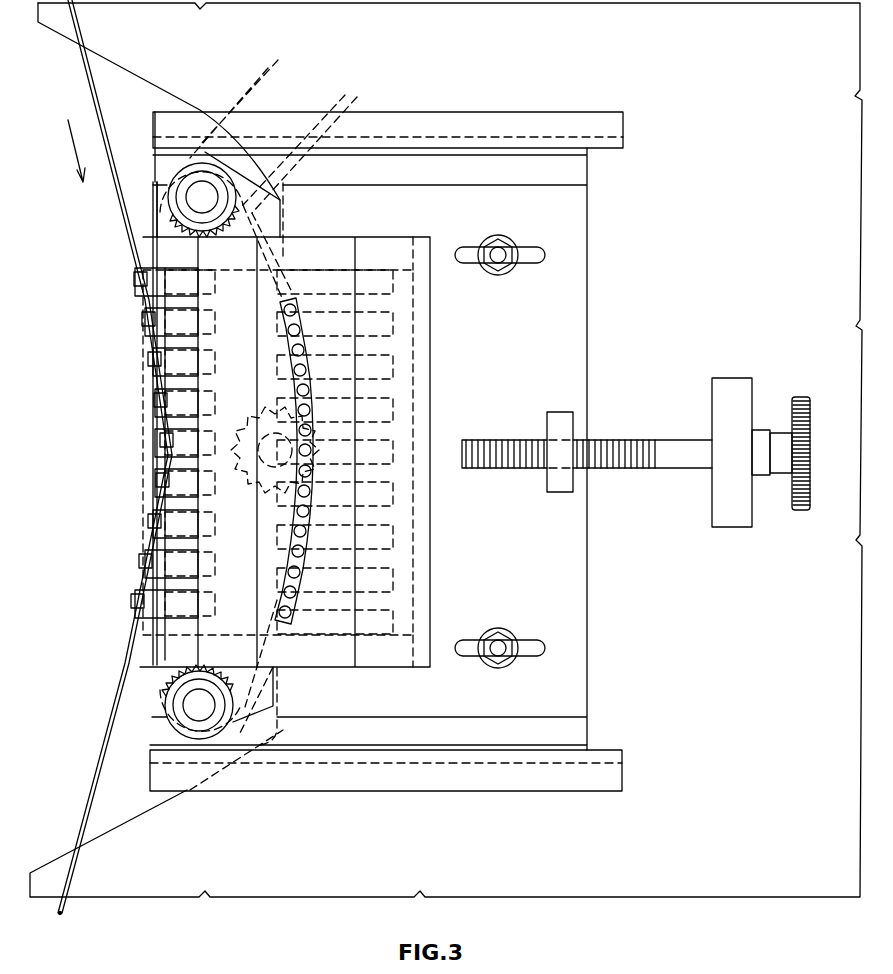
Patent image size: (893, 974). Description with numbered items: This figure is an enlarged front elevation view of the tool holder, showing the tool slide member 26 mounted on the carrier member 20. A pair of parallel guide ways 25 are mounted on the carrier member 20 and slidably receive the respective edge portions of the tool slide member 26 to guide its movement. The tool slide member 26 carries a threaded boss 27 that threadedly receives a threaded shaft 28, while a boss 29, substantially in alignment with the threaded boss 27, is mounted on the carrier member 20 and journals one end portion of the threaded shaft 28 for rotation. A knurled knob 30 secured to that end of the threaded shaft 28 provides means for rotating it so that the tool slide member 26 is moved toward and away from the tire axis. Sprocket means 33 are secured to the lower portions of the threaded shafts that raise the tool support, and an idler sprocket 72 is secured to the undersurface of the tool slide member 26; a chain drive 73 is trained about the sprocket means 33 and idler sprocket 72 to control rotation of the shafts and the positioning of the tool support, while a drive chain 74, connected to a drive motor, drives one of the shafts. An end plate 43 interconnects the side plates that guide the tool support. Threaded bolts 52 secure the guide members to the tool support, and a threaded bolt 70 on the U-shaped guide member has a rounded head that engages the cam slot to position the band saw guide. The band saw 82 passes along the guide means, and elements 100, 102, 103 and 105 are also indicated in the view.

The carrier member 20 is at (758, 180).
The guide ways 25 is at (585, 120).
The tool slide member 26 is at (585, 297).
The threaded boss 27 is at (570, 415).
The threaded shaft 28 is at (612, 470).
The boss 29 is at (730, 523).
The knurled knob 30 is at (802, 397).
The sprocket means 33 is at (185, 228).
The end plate 43 is at (408, 550).
The threaded bolt 52 is at (293, 352).
The threaded bolt 70 is at (278, 345).
The idler sprocket 72 is at (267, 496).
The chain drive 73 is at (157, 646).
The drive chain 74 is at (266, 66).
The band saw 82 is at (105, 748).
The clamping bolts 100 is at (412, 274).
The carriage plate 102 is at (408, 383).
The slide plate 103 is at (246, 278).
The chain return path 105 is at (282, 585).